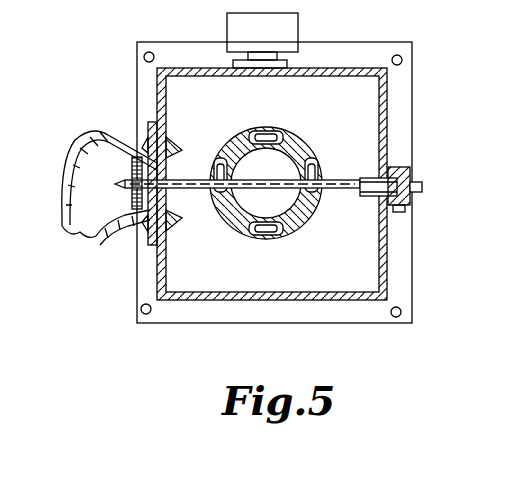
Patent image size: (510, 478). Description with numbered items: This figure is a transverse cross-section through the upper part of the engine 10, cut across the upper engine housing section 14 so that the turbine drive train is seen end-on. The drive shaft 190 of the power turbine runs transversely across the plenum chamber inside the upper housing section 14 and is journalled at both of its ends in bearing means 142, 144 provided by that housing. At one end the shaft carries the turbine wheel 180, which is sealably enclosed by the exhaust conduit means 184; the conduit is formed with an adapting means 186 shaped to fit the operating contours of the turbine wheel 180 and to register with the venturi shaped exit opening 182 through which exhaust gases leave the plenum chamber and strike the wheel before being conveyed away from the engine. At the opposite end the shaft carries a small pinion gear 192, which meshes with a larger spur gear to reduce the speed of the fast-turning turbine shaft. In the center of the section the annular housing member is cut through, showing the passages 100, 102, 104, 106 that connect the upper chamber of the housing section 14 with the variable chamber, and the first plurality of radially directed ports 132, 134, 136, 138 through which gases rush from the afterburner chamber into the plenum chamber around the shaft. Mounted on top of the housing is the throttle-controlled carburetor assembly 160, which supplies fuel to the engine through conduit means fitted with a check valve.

The engine 10 is at (418, 124).
The upper engine housing section 14 is at (365, 68).
The passage 100 is at (272, 180).
The passage 102 is at (236, 165).
The passage 104 is at (266, 137).
The passage 106 is at (310, 200).
The radially directed port 132 is at (236, 220).
The radially directed port 134 is at (238, 143).
The radially directed port 136 is at (304, 152).
The radially directed port 138 is at (300, 215).
The bearing means 142 is at (162, 210).
The bearing means 144 is at (400, 168).
The carburetor assembly 160 is at (300, 26).
The turbine wheel 180 is at (133, 158).
The venturi shaped exit opening 182 is at (200, 165).
The exhaust conduit means 184 is at (60, 178).
The adapting means 186 is at (100, 232).
The drive shaft 190 is at (342, 178).
The pinion gear 192 is at (404, 212).